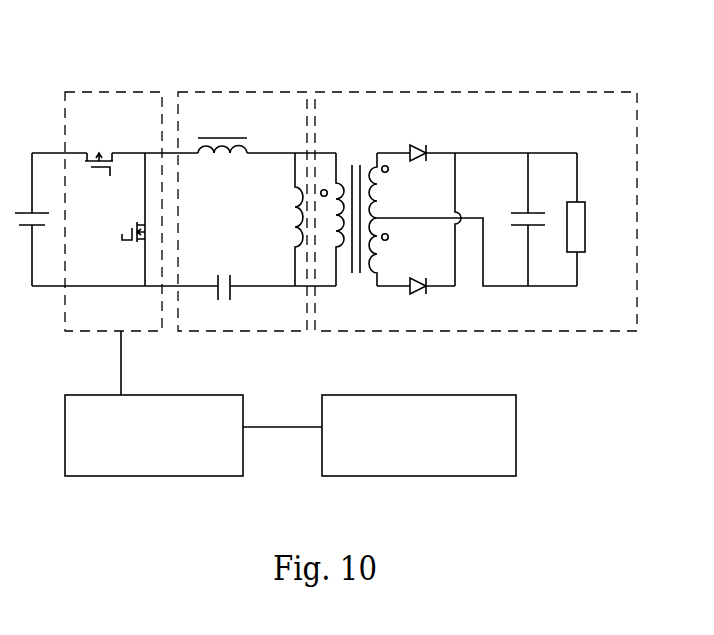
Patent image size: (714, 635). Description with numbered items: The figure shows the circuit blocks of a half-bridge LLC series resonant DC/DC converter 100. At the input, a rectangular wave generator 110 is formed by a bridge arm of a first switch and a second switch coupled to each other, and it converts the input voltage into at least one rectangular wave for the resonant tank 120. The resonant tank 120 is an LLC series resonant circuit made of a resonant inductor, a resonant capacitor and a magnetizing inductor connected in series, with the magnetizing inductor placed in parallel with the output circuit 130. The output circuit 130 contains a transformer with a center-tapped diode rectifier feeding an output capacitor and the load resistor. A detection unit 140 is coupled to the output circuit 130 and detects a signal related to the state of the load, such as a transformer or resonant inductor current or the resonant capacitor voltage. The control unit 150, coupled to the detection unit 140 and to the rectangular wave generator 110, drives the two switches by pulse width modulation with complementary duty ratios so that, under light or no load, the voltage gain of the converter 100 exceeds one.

The DC/DC converter 100 is at (53, 57).
The rectangular wave generator 110 is at (131, 92).
The resonant tank 120 is at (261, 92).
The output circuit 130 is at (469, 92).
The detection unit 140 is at (438, 458).
The control unit 150 is at (173, 458).